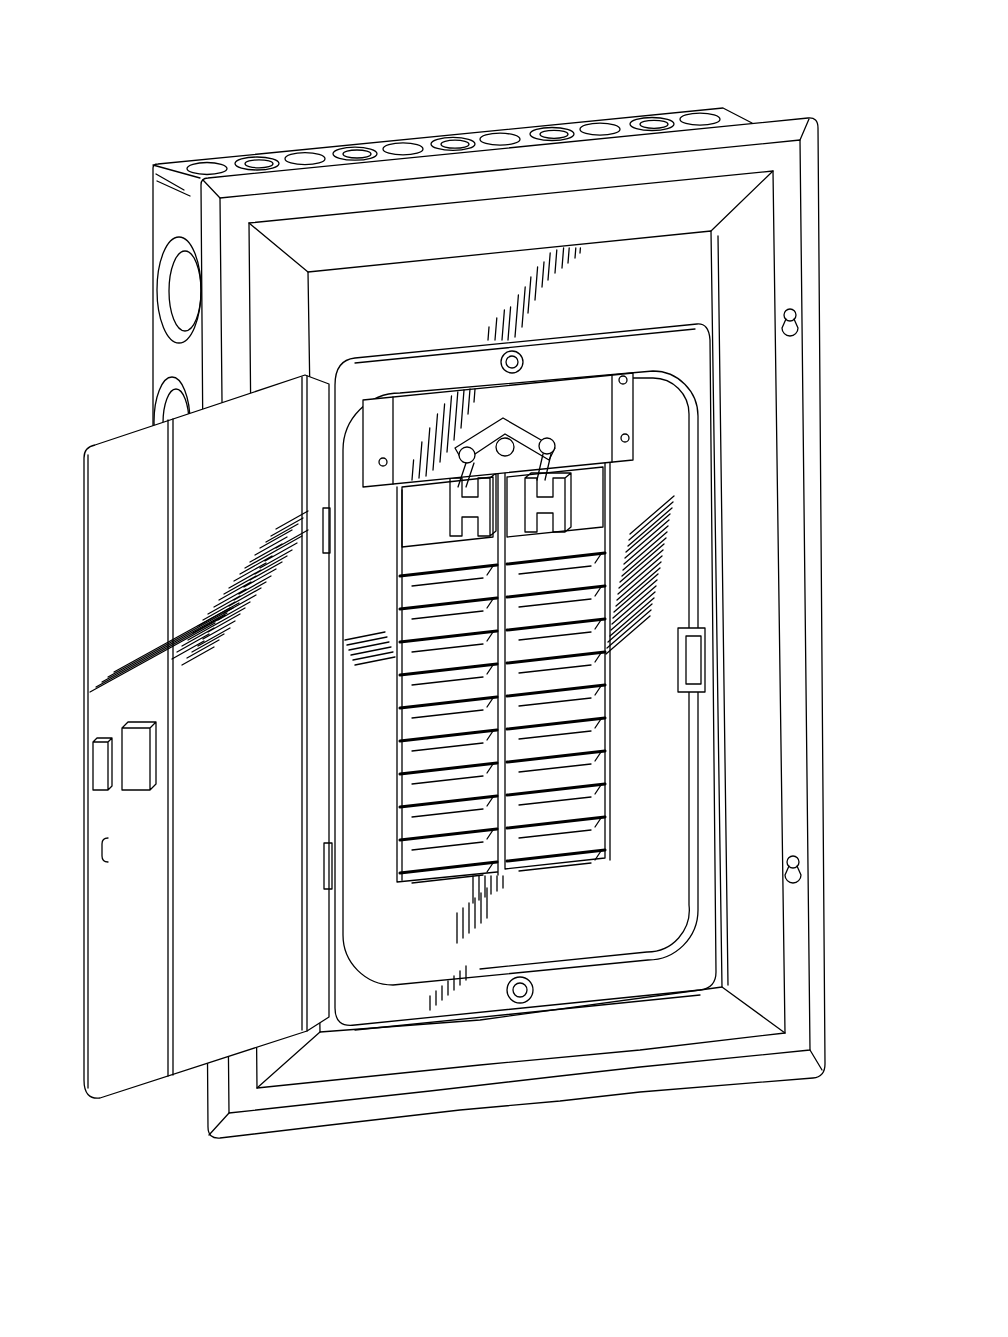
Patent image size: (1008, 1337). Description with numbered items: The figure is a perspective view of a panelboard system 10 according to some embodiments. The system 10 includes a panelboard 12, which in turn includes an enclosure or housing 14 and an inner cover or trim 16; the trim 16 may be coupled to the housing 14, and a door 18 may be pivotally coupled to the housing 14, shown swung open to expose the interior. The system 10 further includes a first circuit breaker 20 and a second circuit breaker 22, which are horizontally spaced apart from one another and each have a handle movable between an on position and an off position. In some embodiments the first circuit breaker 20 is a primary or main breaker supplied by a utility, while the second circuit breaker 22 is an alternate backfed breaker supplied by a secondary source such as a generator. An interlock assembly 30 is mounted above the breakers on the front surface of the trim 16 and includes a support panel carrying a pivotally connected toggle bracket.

The panelboard system 10 is at (764, 70).
The panelboard 12 is at (810, 90).
The enclosure or housing 14 is at (850, 1056).
The inner cover or trim 16 is at (413, 938).
The door 18 is at (68, 1080).
The first circuit breaker 20 is at (370, 500).
The second circuit breaker 22 is at (625, 492).
The interlock assembly 30 is at (650, 410).